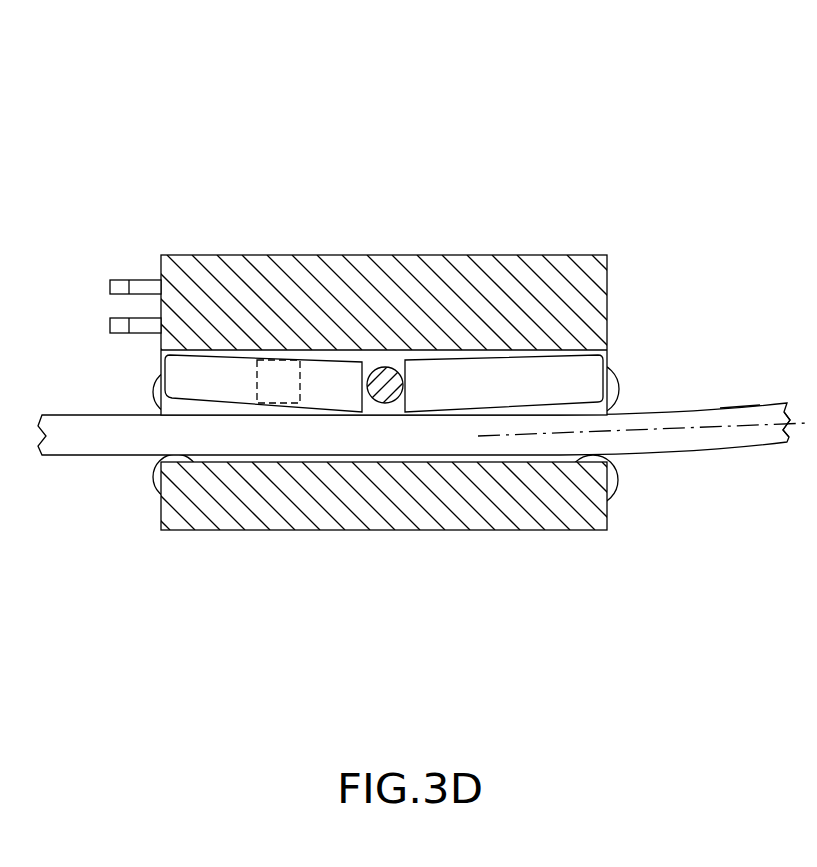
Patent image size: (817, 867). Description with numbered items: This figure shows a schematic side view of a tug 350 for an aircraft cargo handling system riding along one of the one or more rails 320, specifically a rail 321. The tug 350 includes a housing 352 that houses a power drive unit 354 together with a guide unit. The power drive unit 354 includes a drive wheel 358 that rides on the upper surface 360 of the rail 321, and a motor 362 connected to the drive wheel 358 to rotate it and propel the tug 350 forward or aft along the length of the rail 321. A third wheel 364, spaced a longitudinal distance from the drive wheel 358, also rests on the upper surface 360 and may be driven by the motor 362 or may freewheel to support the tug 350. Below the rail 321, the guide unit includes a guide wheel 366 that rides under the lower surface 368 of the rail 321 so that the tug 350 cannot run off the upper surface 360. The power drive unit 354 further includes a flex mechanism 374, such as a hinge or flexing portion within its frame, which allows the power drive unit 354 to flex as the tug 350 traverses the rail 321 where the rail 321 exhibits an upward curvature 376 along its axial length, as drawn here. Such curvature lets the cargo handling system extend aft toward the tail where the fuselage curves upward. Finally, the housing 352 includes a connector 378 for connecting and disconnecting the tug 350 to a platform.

The tug 350 is at (597, 120).
The housing 352 is at (598, 263).
The power drive unit 354 is at (345, 382).
The drive wheel 358 is at (153, 388).
The upper surface 360 is at (703, 410).
The motor 362 is at (279, 387).
The third wheel 364 is at (610, 383).
The guide wheel 366 is at (157, 478).
The lower surface 368 is at (645, 451).
The flex mechanism 374 is at (383, 402).
The upward curvature 376 is at (804, 423).
The connector 378 is at (122, 270).
The rails 320 is at (735, 436).
The rail 321 is at (700, 432).